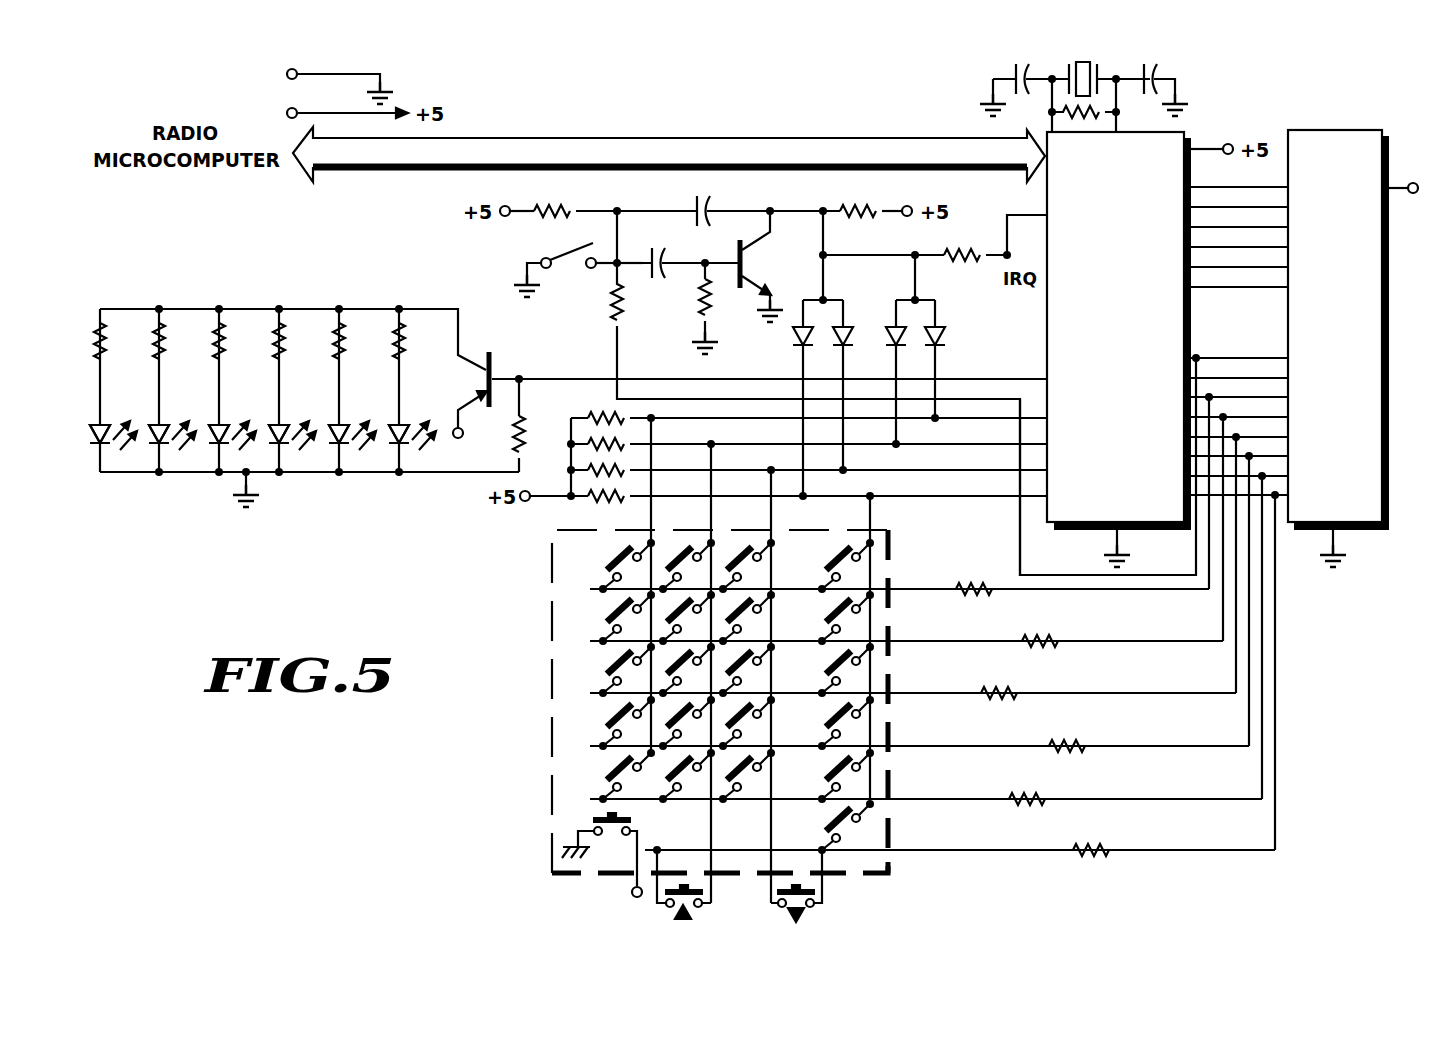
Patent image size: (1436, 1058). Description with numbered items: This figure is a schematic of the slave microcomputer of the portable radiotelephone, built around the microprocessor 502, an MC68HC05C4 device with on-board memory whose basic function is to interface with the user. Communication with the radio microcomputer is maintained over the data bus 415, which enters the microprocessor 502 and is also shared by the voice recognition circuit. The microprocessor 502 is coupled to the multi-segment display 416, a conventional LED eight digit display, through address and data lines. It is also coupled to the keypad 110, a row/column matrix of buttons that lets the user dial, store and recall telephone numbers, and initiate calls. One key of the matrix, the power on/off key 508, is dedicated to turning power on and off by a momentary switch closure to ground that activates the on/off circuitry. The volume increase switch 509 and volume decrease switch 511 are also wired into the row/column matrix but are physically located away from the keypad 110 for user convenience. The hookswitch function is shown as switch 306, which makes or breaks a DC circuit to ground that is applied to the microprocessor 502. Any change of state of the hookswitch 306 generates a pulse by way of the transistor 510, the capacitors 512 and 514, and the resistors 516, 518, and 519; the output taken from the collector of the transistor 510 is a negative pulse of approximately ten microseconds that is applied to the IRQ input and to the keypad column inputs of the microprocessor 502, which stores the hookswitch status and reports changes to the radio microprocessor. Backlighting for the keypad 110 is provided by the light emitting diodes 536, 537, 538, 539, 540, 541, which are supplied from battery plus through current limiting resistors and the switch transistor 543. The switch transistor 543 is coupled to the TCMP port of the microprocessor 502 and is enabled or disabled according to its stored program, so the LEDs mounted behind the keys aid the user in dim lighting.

The data bus 415 is at (703, 138).
The display 416 is at (1328, 130).
The microprocessor 502 is at (1047, 336).
The capacitor 512 is at (711, 204).
The resistor 519 is at (551, 220).
The hookswitch 306 is at (566, 270).
The capacitor 514 is at (662, 277).
The resistor 518 is at (617, 302).
The transistor 510 is at (758, 260).
The resistor 516 is at (854, 217).
The switch transistor 543 is at (510, 353).
The light emitting diode 536 is at (102, 423).
The light emitting diode 537 is at (161, 423).
The light emitting diode 538 is at (221, 423).
The light emitting diode 539 is at (281, 423).
The light emitting diode 540 is at (341, 423).
The light emitting diode 541 is at (401, 423).
The keypad 110 is at (552, 621).
The power on/off key 508 is at (634, 818).
The volume increase switch 509 is at (703, 905).
The volume decrease switch 511 is at (822, 905).